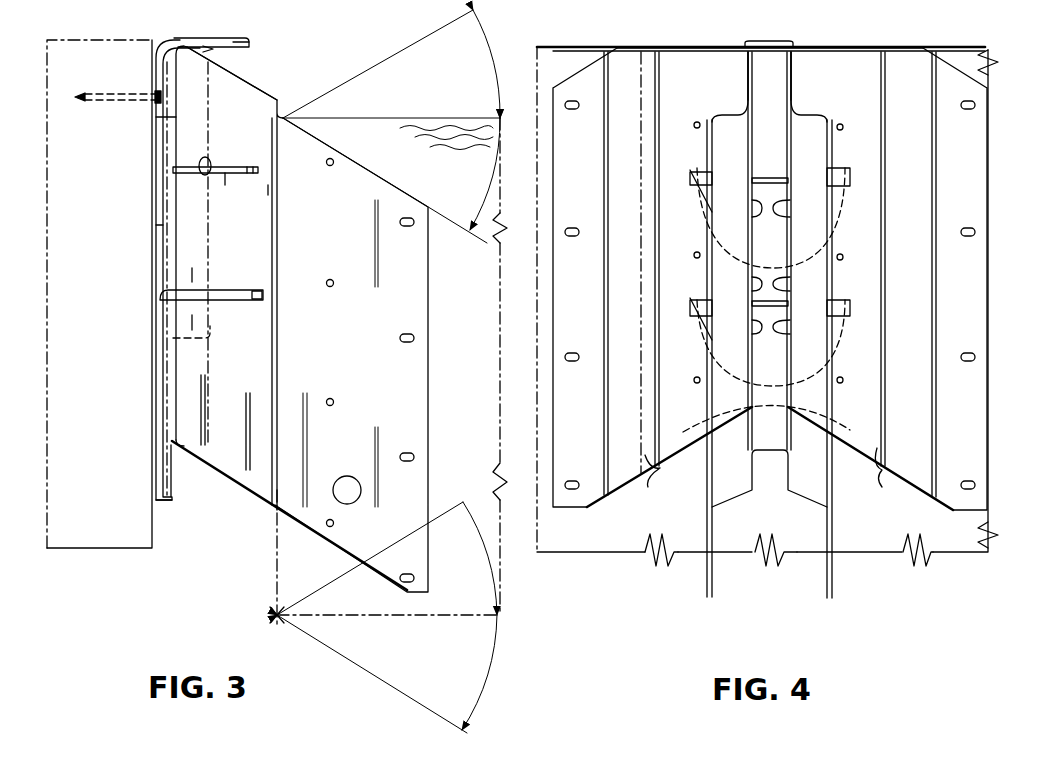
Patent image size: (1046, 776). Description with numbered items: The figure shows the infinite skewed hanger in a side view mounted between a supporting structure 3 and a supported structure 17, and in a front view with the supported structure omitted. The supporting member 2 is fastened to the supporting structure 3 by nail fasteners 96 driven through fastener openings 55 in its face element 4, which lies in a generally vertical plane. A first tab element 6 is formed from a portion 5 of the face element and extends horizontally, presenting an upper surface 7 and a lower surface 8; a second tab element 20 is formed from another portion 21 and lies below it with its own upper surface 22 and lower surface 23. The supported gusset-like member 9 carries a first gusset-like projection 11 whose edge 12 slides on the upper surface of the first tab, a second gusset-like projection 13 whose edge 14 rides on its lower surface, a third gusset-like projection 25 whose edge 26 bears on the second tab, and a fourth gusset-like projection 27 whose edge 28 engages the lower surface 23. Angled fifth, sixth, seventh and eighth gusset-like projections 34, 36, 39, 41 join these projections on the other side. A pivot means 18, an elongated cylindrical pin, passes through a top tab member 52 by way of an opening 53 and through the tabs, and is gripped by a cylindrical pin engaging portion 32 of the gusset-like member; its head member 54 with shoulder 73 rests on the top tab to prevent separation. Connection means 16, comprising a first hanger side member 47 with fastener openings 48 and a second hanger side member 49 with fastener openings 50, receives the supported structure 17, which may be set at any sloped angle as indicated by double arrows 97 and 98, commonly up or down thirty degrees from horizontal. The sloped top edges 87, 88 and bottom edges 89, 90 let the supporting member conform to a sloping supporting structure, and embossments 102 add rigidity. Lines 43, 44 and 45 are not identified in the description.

In FIG. 3, the supporting member 2 is at (162, 37).
In FIG. 4, the supporting member 2 is at (556, 507).
In FIG. 3, the supporting structure 3 is at (88, 40).
In FIG. 4, the supporting structure 3 is at (603, 46).
In FIG. 3, the face element 4 is at (178, 494).
In FIG. 4, the face element 4 is at (716, 80).
In FIG. 3, the portion of the face element 5 is at (155, 248).
In FIG. 4, the portion of the face element 5 is at (700, 190).
In FIG. 3, the first tab element 6 is at (212, 158).
In FIG. 4, the first tab element 6 is at (776, 178).
In FIG. 3, the upper surface 7 is at (236, 167).
In FIG. 4, the upper surface 7 is at (780, 153).
In FIG. 3, the lower surface 8 is at (226, 178).
In FIG. 4, the lower surface 8 is at (781, 182).
In FIG. 3, the supported gusset-like member 9 is at (264, 81).
In FIG. 4, the supported gusset-like member 9 is at (745, 82).
In FIG. 3, the first gusset-like projection 11 is at (196, 134).
In FIG. 4, the first gusset-like projection 11 is at (760, 133).
In FIG. 3, the edge 12 is at (268, 187).
In FIG. 3, the second gusset-like projection 13 is at (192, 200).
In FIG. 4, the second gusset-like projection 13 is at (760, 208).
In FIG. 3, the edge 14 is at (203, 176).
In FIG. 3, the connection means 16 is at (316, 538).
In FIG. 4, the connection means 16 is at (833, 485).
In FIG. 3, the supported structure 17 is at (502, 584).
In FIG. 3, the pivot means 18 is at (210, 343).
In FIG. 4, the pivot means 18 is at (808, 258).
In FIG. 3, the second tab element 20 is at (216, 292).
In FIG. 4, the second tab element 20 is at (770, 302).
In FIG. 3, the portion of the face element 21 is at (163, 347).
In FIG. 4, the portion of the face element 21 is at (712, 333).
In FIG. 4, the upper surface 22 is at (840, 297).
In FIG. 4, the lower surface 23 is at (840, 318).
In FIG. 3, the third gusset-like projection 25 is at (192, 275).
In FIG. 4, the third gusset-like projection 25 is at (752, 285).
In FIG. 3, the edge 26 is at (263, 293).
In FIG. 3, the fourth gusset-like projection 27 is at (192, 322).
In FIG. 4, the fourth gusset-like projection 27 is at (752, 330).
In FIG. 3, the edge 28 is at (263, 302).
In FIG. 3, the cylindrical pin engaging portion 32 is at (156, 117).
In FIG. 4, the fifth gusset-like projection 34 is at (803, 133).
In FIG. 4, the sixth gusset-like projection 36 is at (791, 213).
In FIG. 4, the seventh gusset-like projection 39 is at (782, 272).
In FIG. 4, the eighth gusset-like projection 41 is at (781, 323).
In FIG. 3, the wall 43 is at (168, 215).
In FIG. 3, the wall 44 is at (160, 297).
In FIG. 3, the wall 45 is at (162, 378).
In FIG. 3, the first hanger side member 47 is at (433, 545).
In FIG. 4, the first hanger side member 47 is at (705, 588).
In FIG. 3, the fastener openings 48 is at (333, 400).
In FIG. 4, the fastener openings 48 is at (712, 400).
In FIG. 4, the second hanger side member 49 is at (826, 580).
In FIG. 4, the fastener openings 50 is at (835, 400).
In FIG. 3, the top tab member 52 is at (265, 44).
In FIG. 4, the top tab member 52 is at (700, 46).
In FIG. 3, the opening 53 is at (215, 49).
In FIG. 3, the head member 54 is at (197, 38).
In FIG. 4, the head member 54 is at (780, 45).
In FIG. 3, the fastener openings 55 is at (158, 226).
In FIG. 4, the fastener openings 55 is at (573, 110).
In FIG. 3, the shoulder 73 is at (238, 40).
In FIG. 4, the top edge 87 is at (560, 80).
In FIG. 4, the top edge 88 is at (958, 75).
In FIG. 4, the bottom edge 89 is at (597, 508).
In FIG. 4, the bottom edge 90 is at (933, 510).
In FIG. 3, the nail fasteners 96 is at (110, 92).
In FIG. 3, the double arrow 97 is at (488, 75).
In FIG. 3, the double arrow 98 is at (492, 182).
In FIG. 3, the embossments 102 is at (173, 462).
In FIG. 4, the embossments 102 is at (648, 487).